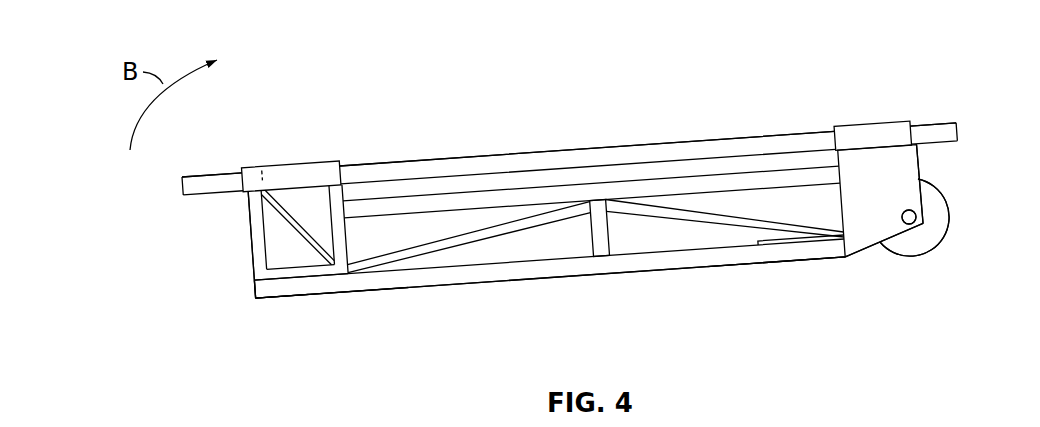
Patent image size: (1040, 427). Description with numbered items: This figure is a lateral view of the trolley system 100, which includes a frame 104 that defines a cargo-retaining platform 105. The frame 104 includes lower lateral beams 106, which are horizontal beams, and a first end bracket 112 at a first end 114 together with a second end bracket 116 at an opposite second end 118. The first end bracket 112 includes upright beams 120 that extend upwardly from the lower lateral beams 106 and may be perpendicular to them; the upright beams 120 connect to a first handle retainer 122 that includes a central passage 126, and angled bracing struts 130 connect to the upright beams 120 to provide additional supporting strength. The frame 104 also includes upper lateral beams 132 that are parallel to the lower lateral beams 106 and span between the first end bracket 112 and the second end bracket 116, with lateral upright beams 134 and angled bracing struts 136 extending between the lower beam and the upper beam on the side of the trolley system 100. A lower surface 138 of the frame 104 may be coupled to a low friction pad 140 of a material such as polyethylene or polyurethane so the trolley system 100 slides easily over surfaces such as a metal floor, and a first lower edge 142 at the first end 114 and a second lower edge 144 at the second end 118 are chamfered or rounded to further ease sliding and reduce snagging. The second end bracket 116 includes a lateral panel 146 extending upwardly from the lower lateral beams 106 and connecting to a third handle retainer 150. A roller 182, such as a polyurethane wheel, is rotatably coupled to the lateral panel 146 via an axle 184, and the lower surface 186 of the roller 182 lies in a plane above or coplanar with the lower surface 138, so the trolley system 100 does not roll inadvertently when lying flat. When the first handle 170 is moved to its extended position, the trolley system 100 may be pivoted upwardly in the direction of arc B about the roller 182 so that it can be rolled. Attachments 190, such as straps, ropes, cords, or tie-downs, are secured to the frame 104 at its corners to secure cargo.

The trolley system 100 is at (183, 53).
The frame 104 is at (240, 257).
The cargo-retaining platform 105 is at (463, 187).
The lower lateral beams 106 is at (248, 286).
The first end bracket 112 is at (258, 217).
The first end 114 is at (243, 316).
The second end bracket 116 is at (907, 173).
The second end 118 is at (828, 275).
The upright beams 120 is at (262, 215).
The first handle retainer 122 is at (298, 178).
The central passage 126 is at (257, 182).
The angled bracing struts 130 is at (325, 247).
The upper lateral beams 132 is at (490, 200).
The lateral upright beams 134 is at (605, 235).
The angled bracing struts 136 is at (509, 222).
The lower surface 138 is at (412, 288).
The low friction pad 140 is at (502, 281).
The first lower edge 142 is at (255, 300).
The second lower edge 144 is at (847, 257).
The lateral panel 146 is at (878, 175).
The third handle retainer 150 is at (867, 131).
The first handle 170 is at (650, 142).
The roller 182 is at (946, 242).
The axle 184 is at (910, 225).
The lower surface of roller 186 is at (937, 247).
The attachment 190 is at (278, 268).